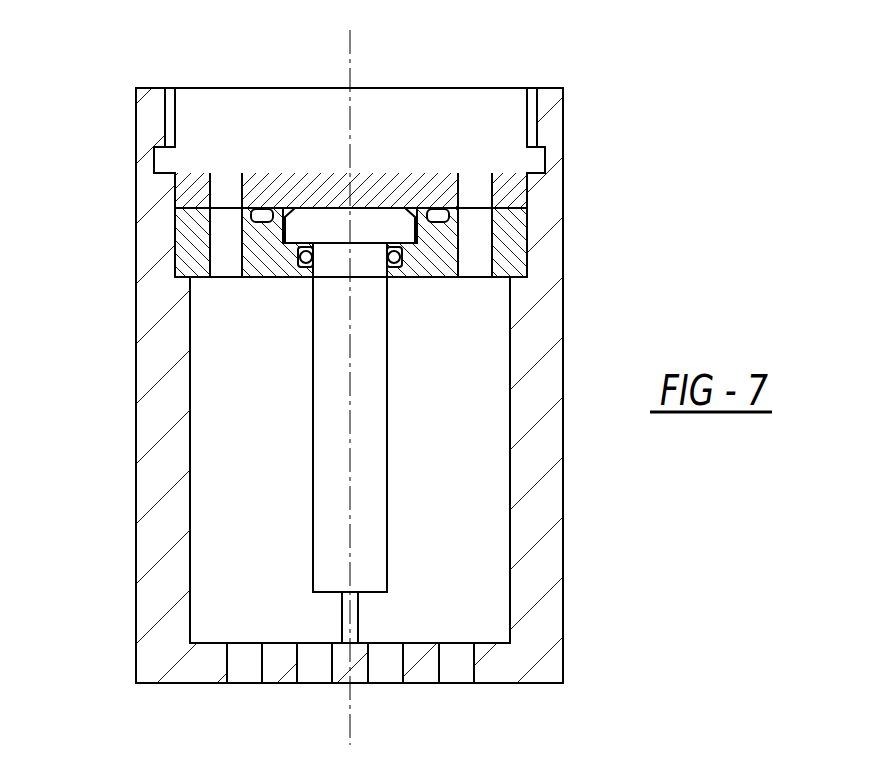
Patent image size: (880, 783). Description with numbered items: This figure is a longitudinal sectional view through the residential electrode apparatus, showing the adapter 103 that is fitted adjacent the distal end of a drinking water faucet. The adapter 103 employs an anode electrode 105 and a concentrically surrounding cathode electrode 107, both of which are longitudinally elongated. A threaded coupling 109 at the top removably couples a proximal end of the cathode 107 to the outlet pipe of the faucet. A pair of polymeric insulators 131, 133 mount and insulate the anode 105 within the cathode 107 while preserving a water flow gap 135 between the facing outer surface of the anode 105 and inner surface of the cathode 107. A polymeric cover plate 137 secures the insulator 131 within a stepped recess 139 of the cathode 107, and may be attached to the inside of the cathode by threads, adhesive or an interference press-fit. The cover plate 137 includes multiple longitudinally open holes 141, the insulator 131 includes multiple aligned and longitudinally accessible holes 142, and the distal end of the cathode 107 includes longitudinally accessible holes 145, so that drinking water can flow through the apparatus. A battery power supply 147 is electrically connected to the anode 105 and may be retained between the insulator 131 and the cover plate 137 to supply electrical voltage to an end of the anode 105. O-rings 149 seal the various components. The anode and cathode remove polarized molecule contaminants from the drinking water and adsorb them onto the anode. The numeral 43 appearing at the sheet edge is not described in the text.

The adapter 103 is at (377, 388).
The anode electrode 105 is at (457, 325).
The cathode electrode 107 is at (160, 403).
The threaded coupling 109 is at (537, 116).
The polymeric insulator 131 is at (510, 248).
The polymeric insulator 133 is at (358, 622).
The water flow gap 135 is at (472, 434).
The polymeric cover plate 137 is at (302, 185).
The stepped recess 139 is at (182, 272).
The longitudinally open holes 141 is at (228, 187).
The longitudinally accessible holes 142 is at (228, 263).
The longitudinally accessible holes 145 is at (458, 665).
The battery power supply 147 is at (376, 227).
The O-rings 149 is at (300, 259).
The valve 43 is at (817, 782).